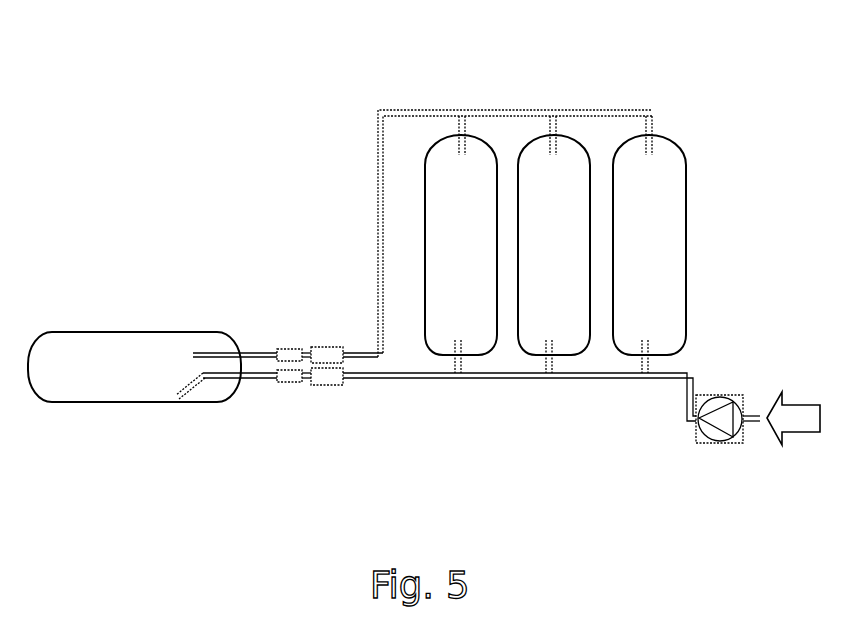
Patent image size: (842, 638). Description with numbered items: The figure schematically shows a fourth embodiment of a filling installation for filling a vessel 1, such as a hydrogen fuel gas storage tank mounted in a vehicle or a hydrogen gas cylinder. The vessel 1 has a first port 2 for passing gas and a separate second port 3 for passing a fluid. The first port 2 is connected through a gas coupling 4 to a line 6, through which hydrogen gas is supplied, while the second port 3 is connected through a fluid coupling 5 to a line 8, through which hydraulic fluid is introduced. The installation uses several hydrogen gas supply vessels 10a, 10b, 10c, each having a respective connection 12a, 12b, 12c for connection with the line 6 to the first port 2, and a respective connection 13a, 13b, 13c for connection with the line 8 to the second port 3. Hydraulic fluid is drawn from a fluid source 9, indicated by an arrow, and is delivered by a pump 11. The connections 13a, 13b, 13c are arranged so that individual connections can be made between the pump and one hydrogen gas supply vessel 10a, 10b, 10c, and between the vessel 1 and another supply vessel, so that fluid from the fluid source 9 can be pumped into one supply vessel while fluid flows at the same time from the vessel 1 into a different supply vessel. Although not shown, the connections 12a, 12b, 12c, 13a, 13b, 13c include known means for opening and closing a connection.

The vessel 1 is at (70, 330).
The first port 2 is at (292, 349).
The second port 3 is at (288, 383).
The gas coupling 4 is at (335, 347).
The fluid coupling 5 is at (335, 386).
The line 6 is at (383, 105).
The line 8 is at (390, 378).
The fluid source 9 is at (792, 415).
The hydrogen gas supply vessel 10a is at (443, 150).
The hydrogen gas supply vessel 10b is at (527, 150).
The hydrogen gas supply vessel 10c is at (625, 147).
The pump 11 is at (718, 443).
The connection 12a is at (465, 117).
The connection 12b is at (552, 118).
The connection 12c is at (650, 118).
The connection 13a is at (458, 362).
The connection 13b is at (547, 362).
The connection 13c is at (645, 362).